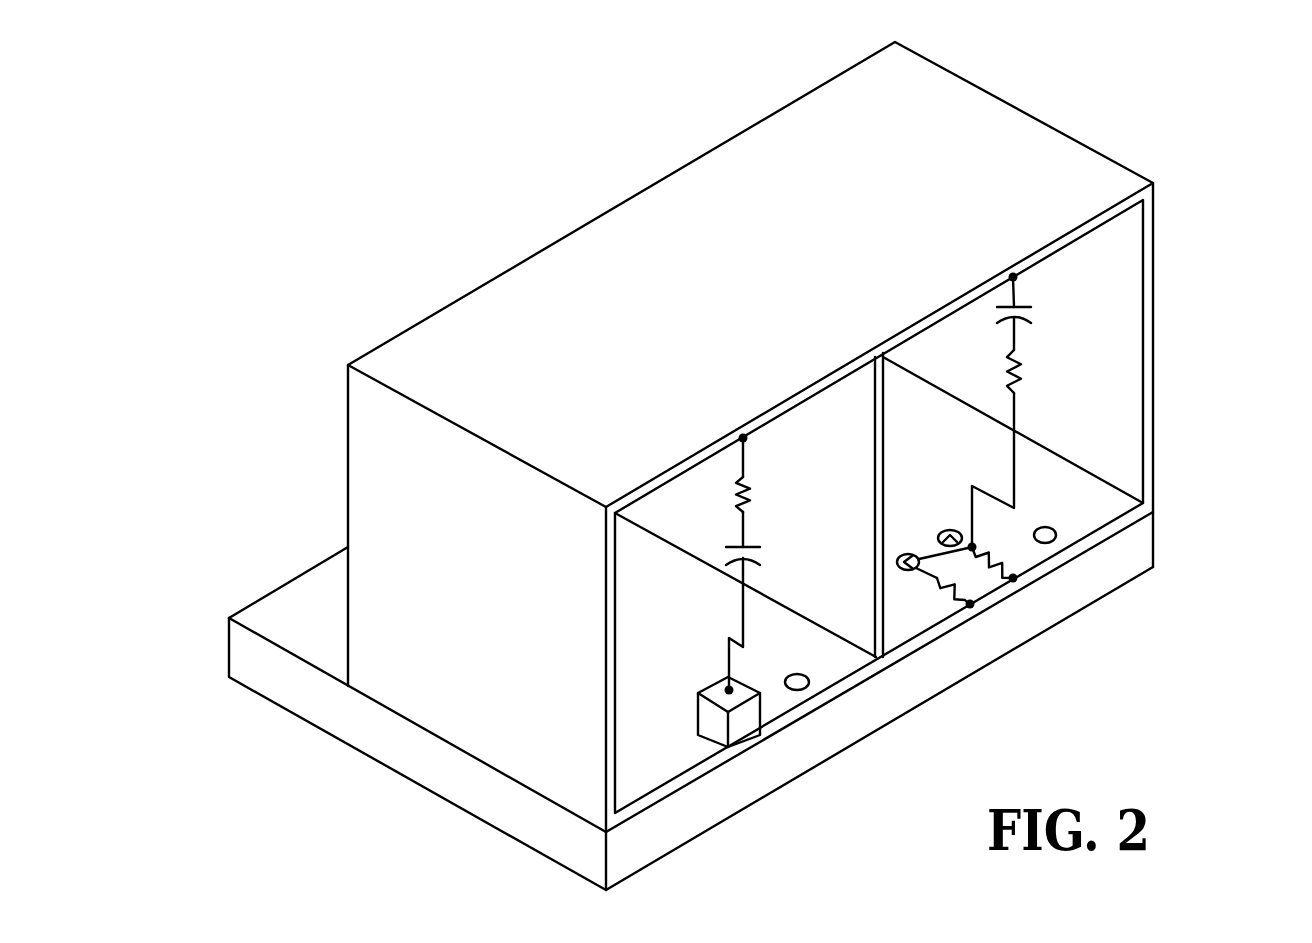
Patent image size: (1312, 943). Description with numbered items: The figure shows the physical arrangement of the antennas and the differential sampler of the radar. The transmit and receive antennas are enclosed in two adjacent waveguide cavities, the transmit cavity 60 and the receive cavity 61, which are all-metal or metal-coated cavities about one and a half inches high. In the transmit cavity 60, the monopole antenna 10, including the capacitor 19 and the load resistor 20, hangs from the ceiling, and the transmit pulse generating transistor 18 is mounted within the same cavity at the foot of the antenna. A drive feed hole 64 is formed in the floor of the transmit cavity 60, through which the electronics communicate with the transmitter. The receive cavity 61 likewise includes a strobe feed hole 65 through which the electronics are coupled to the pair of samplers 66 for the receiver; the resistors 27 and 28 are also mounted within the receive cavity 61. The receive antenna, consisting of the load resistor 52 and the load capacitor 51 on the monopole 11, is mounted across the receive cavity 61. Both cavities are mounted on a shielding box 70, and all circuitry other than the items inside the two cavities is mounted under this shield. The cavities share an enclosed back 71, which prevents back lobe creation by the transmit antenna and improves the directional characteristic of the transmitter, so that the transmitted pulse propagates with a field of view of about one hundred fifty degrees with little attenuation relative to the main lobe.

The monopole antenna 10 is at (743, 607).
The monopole 11 is at (1013, 452).
The transmit pulse generating transistor 18 is at (716, 693).
The capacitor 19 is at (748, 544).
The load resistor 20 is at (746, 478).
The resistor 27 is at (967, 609).
The resistor 28 is at (1010, 582).
The load capacitor 51 is at (1018, 305).
The load resistor 52 is at (1021, 368).
The transmit cavity 60 is at (686, 744).
The receive cavity 61 is at (1114, 468).
The drive feed hole 64 is at (809, 680).
The strobe feed hole 65 is at (1057, 533).
The pair of samplers 66 is at (906, 554).
The shielding box 70 is at (408, 758).
The enclosed back 71 is at (480, 287).